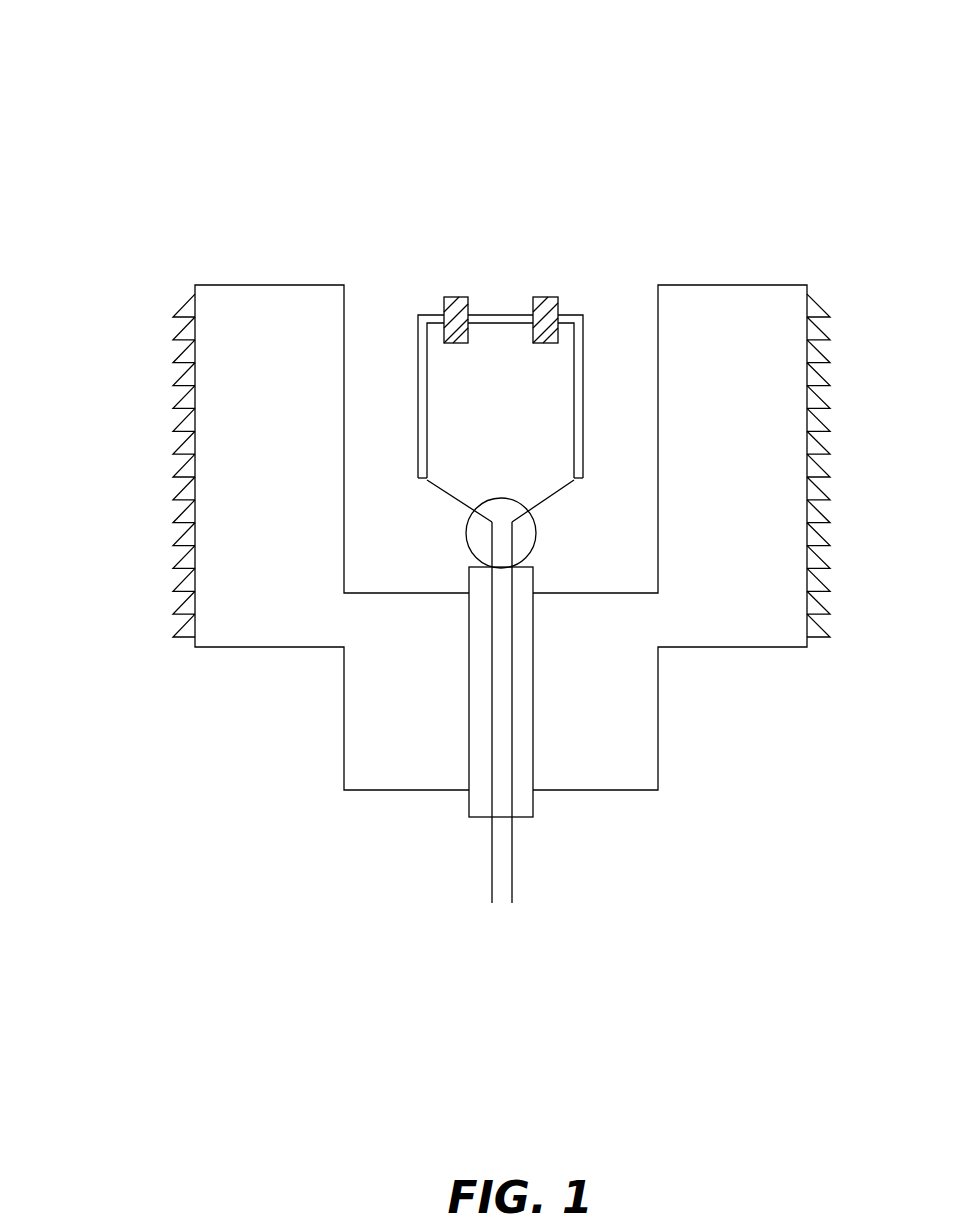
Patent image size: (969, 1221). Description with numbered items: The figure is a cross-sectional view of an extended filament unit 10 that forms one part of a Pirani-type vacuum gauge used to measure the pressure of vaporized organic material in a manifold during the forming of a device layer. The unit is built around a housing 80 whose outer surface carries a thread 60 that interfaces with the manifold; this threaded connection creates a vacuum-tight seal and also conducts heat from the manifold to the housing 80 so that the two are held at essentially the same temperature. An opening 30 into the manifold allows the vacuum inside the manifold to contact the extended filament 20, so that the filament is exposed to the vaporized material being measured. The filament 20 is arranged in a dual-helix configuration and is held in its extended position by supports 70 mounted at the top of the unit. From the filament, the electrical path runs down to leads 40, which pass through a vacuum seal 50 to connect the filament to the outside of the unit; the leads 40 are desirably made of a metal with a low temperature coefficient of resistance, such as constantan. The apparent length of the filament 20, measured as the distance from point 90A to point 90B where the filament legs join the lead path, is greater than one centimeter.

The extended filament unit 10 is at (104, 189).
The extended filament 20 is at (430, 322).
The opening 30 is at (484, 142).
The leads 40 is at (492, 870).
The vacuum seal 50 is at (527, 805).
The thread 60 is at (190, 305).
The supports 70 is at (456, 300).
The housing 80 is at (650, 688).
The point 90A is at (583, 480).
The point 90B is at (418, 480).